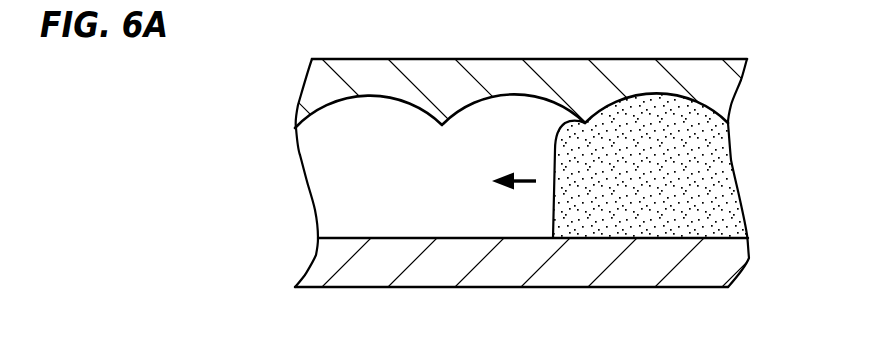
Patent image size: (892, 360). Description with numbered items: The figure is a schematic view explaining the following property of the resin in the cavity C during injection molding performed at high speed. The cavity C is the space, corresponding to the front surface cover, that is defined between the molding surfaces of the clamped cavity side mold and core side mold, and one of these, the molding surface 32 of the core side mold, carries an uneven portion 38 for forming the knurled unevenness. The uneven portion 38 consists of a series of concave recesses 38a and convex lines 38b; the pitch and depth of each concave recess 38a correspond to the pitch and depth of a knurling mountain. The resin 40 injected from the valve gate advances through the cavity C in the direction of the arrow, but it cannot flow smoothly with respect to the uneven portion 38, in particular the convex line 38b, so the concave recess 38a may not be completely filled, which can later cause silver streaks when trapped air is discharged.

The molding surface 32 is at (480, 98).
The uneven portion 38 is at (425, 135).
The concave recess 38a is at (508, 110).
The convex line 38b is at (442, 125).
The resin 40 is at (648, 137).
The cavity C is at (327, 182).